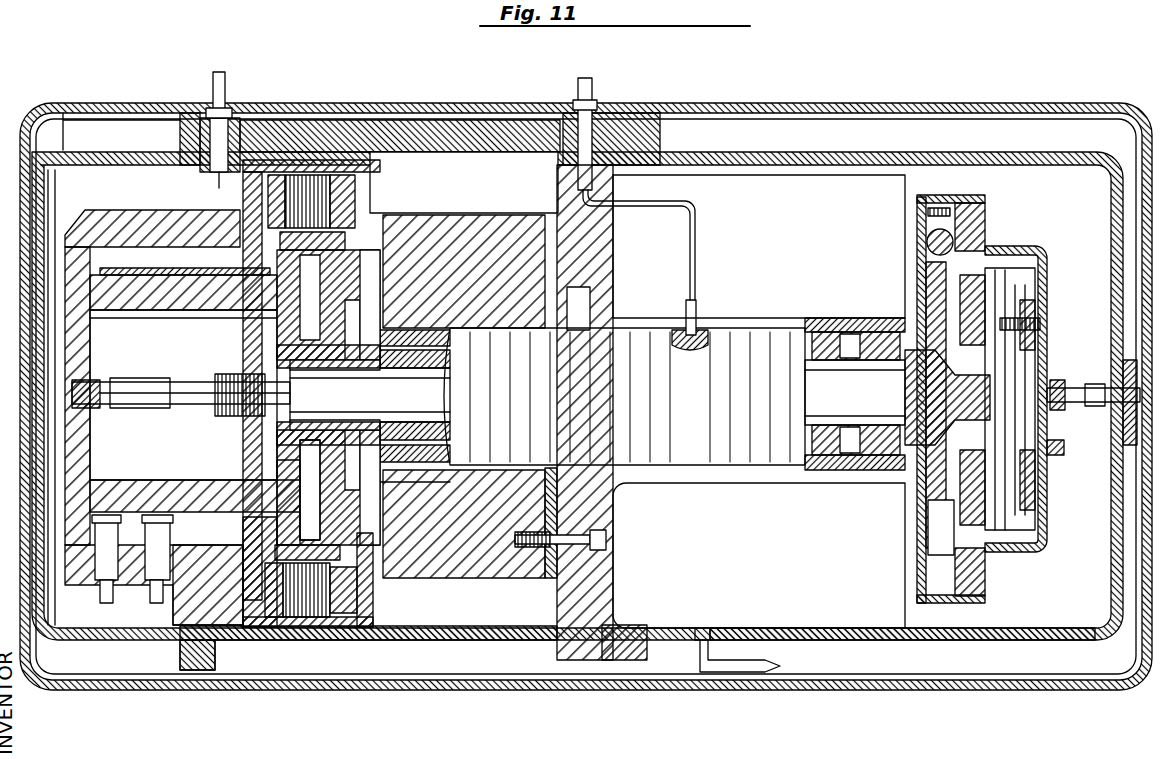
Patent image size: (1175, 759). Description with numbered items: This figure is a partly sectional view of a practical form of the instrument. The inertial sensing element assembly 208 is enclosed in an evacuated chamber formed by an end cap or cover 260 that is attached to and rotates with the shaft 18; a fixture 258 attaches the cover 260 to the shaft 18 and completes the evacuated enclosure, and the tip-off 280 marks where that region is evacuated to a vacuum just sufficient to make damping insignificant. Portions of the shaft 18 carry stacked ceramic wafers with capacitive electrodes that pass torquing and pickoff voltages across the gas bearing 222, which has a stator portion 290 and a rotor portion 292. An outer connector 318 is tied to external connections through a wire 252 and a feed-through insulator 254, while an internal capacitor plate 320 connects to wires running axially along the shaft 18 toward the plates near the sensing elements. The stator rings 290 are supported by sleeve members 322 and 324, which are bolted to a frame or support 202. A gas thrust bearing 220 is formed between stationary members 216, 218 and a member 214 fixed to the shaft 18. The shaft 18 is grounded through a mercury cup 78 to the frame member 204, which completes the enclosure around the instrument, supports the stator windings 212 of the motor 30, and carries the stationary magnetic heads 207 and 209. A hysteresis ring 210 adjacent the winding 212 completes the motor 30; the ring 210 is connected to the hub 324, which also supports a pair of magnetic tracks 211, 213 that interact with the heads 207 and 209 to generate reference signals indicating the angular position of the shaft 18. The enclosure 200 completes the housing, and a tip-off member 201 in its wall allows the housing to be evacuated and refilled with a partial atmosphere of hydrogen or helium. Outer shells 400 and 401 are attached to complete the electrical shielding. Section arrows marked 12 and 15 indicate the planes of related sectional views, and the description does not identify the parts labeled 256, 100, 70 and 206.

The outer shell 401 is at (834, 104).
The outer shell 400 is at (370, 106).
The mounting bolt 256 is at (225, 148).
The feed-through insulator 254 is at (604, 118).
The wire 252 is at (697, 210).
The outer connector 318 is at (698, 318).
The gas bearing 222 is at (396, 350).
The stationary member 218 is at (378, 487).
The sleeve member 324 is at (425, 575).
The stator portion 290 is at (655, 440).
The frame or support 202 is at (600, 597).
The tip-off member 201 is at (737, 657).
The enclosure 200 is at (842, 635).
The frame member 204 is at (459, 660).
The internal capacitor plate 320 is at (834, 372).
The sleeve member 322 is at (820, 481).
The shaft 18 is at (840, 404).
The rotor portion 292 is at (864, 424).
The inertial sensing element assembly 208 is at (1034, 326).
The roller 100 is at (928, 240).
The end cap 260 is at (1047, 291).
The output shaft 70 is at (1108, 386).
The tip-off 280 is at (1066, 456).
The fixture 258 is at (913, 542).
The stator windings 212 is at (317, 613).
The motor 30 is at (267, 607).
The foot bracket 206 is at (143, 637).
The magnetic head 207 is at (102, 560).
The magnetic head 209 is at (165, 563).
The magnetic track 211 is at (128, 282).
The magnetic track 213 is at (187, 282).
The mercury cup 78 is at (117, 366).
The stationary member 216 is at (328, 322).
The member 214 is at (348, 338).
The gas thrust bearing 220 is at (326, 460).
The hysteresis ring 210 is at (283, 530).
The section line 15 is at (747, 268).
The section line 12 is at (1025, 182).